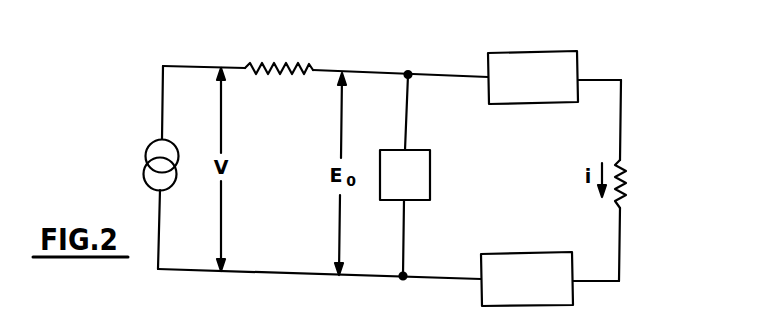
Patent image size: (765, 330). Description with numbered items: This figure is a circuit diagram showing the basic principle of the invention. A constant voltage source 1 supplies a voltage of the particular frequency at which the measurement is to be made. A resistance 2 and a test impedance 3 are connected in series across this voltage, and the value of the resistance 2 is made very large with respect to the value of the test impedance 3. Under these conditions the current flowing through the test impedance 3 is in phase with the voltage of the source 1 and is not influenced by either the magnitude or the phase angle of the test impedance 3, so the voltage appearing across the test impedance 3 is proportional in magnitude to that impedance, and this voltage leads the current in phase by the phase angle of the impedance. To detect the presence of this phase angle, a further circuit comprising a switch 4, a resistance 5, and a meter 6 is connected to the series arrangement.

The constant voltage source 1 is at (146, 160).
The resistance 2 is at (277, 75).
The test impedance 3 is at (431, 180).
The switch 4 is at (545, 104).
The resistance 5 is at (626, 202).
The meter 6 is at (520, 254).